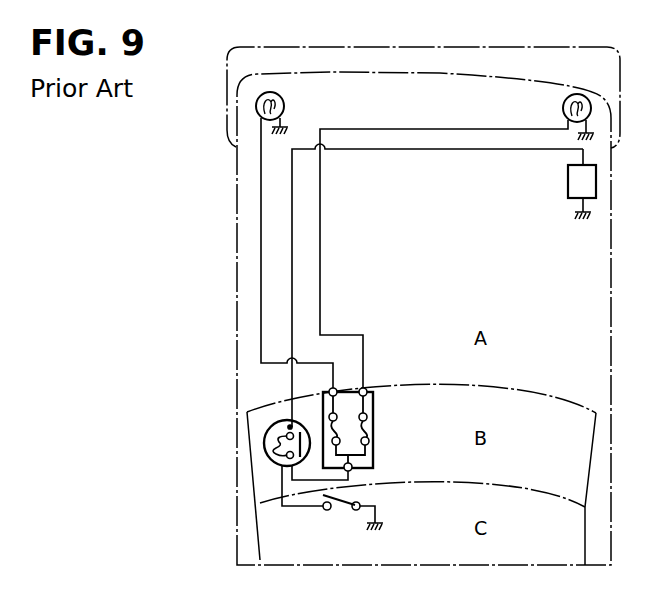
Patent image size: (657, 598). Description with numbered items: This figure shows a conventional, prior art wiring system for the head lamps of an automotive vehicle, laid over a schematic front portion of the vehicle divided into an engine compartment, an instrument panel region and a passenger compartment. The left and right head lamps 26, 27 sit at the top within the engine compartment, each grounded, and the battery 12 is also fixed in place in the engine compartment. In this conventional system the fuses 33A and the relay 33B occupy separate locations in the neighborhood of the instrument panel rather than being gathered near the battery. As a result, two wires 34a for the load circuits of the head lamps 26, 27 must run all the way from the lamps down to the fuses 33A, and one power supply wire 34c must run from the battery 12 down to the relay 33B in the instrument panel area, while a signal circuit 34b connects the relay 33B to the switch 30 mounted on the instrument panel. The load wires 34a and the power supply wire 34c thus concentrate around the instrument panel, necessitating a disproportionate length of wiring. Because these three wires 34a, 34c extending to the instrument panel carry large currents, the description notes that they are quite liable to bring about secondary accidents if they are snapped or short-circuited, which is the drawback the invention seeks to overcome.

The head lamp 26 is at (284, 113).
The head lamp 27 is at (567, 117).
The battery 12 is at (582, 184).
The wires for load circuits 34a is at (261, 300).
The power supply wire 34c is at (292, 335).
The fuses 33A is at (355, 434).
The relay 33B is at (283, 436).
The signal circuit 34b is at (318, 505).
The switch 30 is at (353, 513).